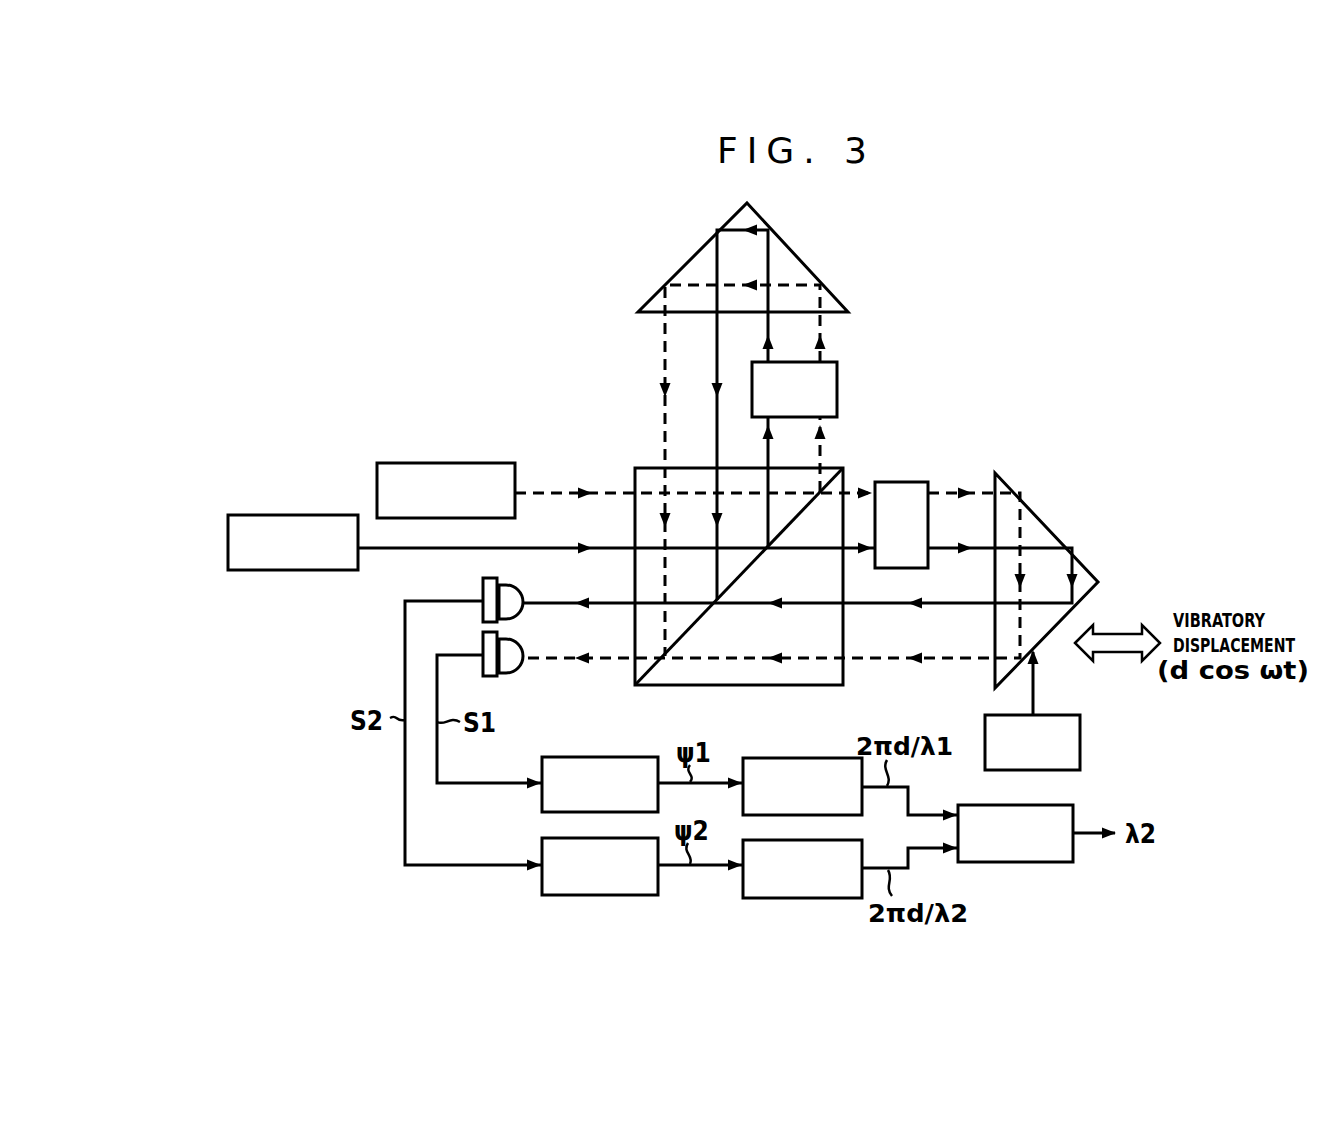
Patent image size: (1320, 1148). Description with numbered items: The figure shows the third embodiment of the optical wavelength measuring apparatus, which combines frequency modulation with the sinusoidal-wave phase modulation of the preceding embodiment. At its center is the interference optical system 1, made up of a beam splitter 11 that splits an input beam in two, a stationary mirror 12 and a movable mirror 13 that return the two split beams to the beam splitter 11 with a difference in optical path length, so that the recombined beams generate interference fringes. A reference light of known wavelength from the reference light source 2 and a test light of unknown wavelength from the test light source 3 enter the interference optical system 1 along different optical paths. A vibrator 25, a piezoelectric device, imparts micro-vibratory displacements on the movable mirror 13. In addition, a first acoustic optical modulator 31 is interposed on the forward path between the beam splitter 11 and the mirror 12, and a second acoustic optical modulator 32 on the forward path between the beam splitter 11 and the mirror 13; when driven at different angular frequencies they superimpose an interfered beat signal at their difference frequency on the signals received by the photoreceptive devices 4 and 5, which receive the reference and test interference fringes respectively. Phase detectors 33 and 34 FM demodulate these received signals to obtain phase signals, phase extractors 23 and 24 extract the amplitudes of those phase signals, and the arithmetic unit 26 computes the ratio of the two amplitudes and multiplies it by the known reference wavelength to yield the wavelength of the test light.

The interference optical system 1 is at (940, 316).
The reference light source 2 is at (460, 462).
The test light source 3 is at (306, 514).
The photoreceptive device 4 is at (510, 672).
The photoreceptive device 5 is at (512, 586).
The beam splitter 11 is at (638, 466).
The mirror 12 is at (800, 255).
The mirror 13 is at (1042, 520).
The phase extractor 23 is at (784, 757).
The phase extractor 24 is at (793, 900).
The vibrator 25 is at (1082, 742).
The arithmetic unit 26 is at (1035, 863).
The first acoustic optical modulator 31 is at (838, 388).
The second acoustic optical modulator 32 is at (905, 482).
The phase detector 33 is at (614, 756).
The phase detector 34 is at (600, 897).